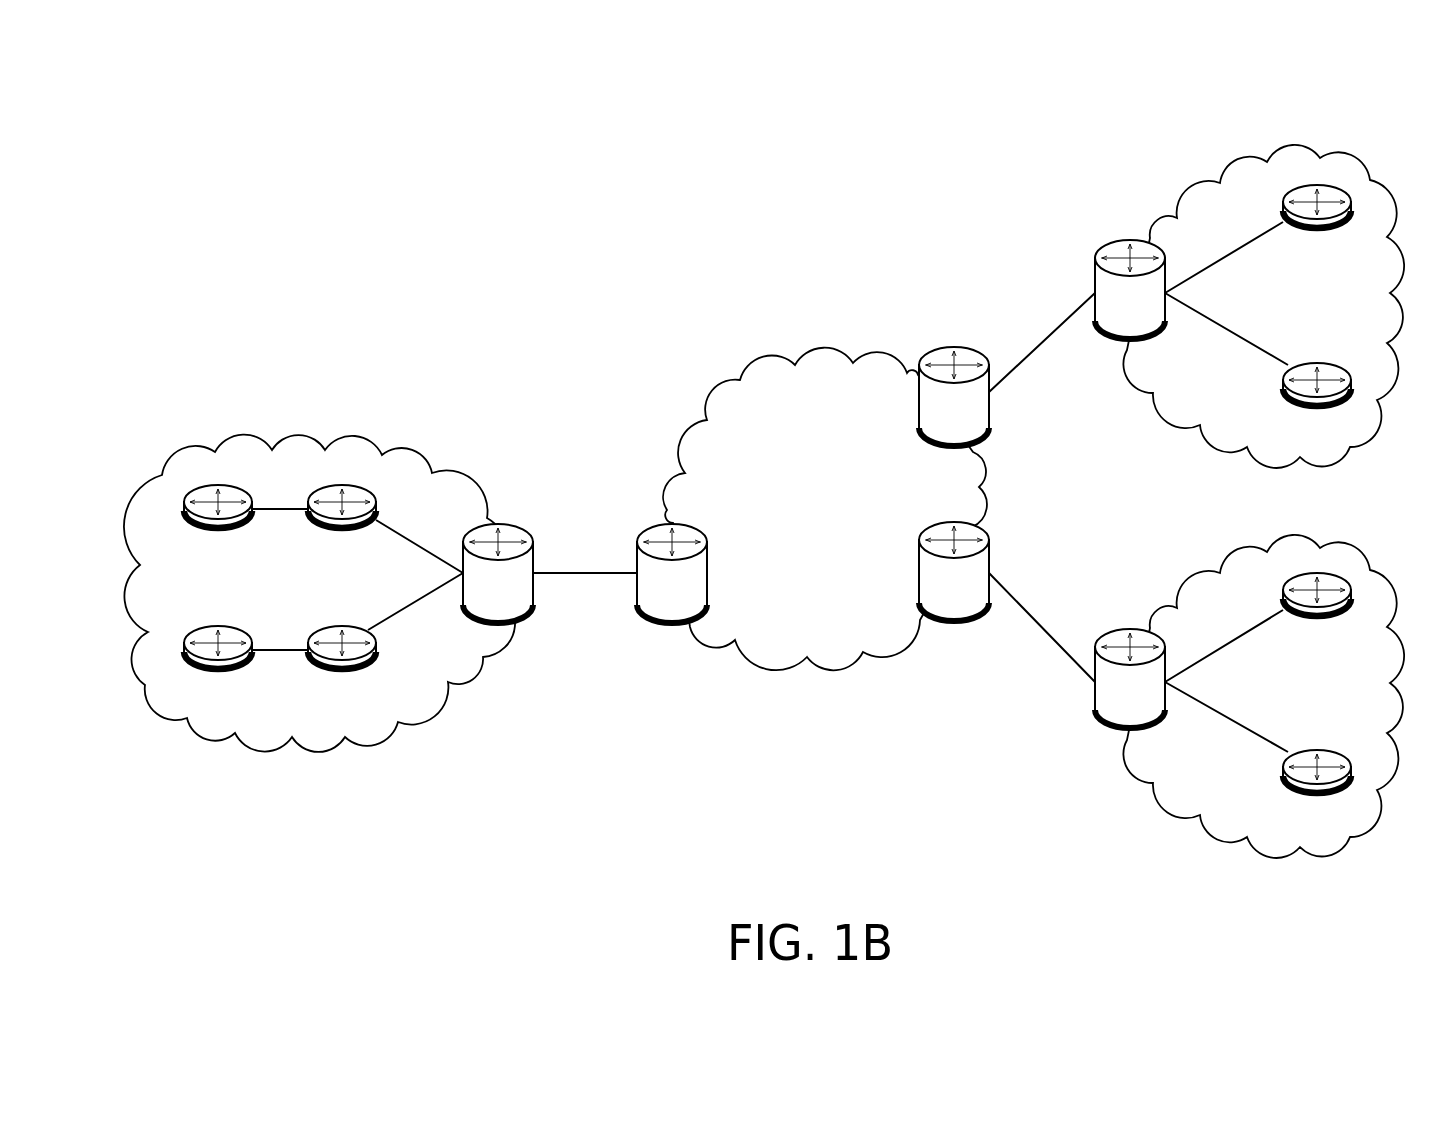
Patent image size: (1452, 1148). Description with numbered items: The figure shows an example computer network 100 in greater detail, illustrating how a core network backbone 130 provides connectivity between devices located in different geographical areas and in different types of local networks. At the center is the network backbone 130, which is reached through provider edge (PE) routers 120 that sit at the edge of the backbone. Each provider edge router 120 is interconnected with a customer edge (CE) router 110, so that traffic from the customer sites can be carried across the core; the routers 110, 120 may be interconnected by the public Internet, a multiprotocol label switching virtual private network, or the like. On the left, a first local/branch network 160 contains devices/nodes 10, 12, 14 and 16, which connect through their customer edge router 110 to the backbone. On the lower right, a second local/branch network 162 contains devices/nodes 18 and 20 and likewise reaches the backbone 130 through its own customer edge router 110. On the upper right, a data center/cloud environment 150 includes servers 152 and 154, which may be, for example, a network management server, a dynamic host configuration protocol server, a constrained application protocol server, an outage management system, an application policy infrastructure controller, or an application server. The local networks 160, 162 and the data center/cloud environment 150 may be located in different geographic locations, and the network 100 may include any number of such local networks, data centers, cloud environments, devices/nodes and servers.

The computer network 100 is at (1357, 92).
The customer edge (CE) routers 110 is at (480, 611).
The provider edge (PE) routers 120 is at (654, 611).
The network backbone 130 is at (799, 531).
The data center/cloud environment 150 is at (1223, 170).
The server 152 is at (1317, 226).
The server 154 is at (1317, 404).
The local/branch network 160 is at (355, 432).
The local/branch network 162 is at (1147, 777).
The device/node 10 is at (218, 525).
The device/node 12 is at (342, 525).
The device/node 14 is at (218, 666).
The device/node 16 is at (342, 666).
The device/node 18 is at (1317, 791).
The device/node 20 is at (1317, 615).